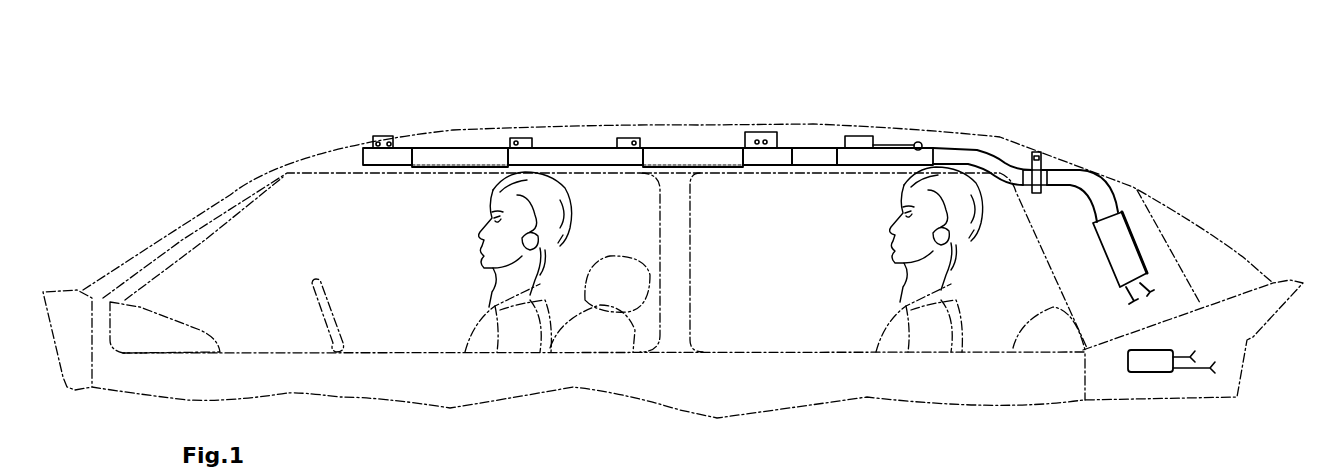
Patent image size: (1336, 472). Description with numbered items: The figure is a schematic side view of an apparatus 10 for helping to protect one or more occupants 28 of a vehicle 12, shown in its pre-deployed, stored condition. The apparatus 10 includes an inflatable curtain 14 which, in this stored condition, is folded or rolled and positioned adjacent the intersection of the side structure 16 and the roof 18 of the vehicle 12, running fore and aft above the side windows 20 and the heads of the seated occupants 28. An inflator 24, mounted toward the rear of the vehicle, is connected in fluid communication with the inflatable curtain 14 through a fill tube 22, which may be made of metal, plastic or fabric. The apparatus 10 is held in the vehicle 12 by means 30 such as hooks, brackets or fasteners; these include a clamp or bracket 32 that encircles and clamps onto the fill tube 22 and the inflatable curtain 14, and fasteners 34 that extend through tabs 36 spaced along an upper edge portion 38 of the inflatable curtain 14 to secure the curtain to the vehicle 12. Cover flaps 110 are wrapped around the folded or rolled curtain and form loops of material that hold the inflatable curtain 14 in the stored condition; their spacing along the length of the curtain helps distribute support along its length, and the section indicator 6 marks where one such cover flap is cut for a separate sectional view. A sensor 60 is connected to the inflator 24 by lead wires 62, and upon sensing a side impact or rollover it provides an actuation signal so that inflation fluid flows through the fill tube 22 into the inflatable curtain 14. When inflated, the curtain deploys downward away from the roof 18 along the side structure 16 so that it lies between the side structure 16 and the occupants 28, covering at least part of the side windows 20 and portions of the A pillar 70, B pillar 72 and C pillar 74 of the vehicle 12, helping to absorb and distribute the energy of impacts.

The section line 6- 6 is at (461, 186).
The apparatus 10 is at (748, 173).
The vehicle 12 is at (212, 162).
The inflatable curtain 14 is at (648, 143).
The side structure 16 is at (677, 373).
The roof 18 is at (698, 130).
The side windows 20 is at (392, 312).
The fill tube 22 is at (1077, 180).
The inflator 24 is at (1113, 238).
The occupants 28 is at (505, 250).
The means 30 is at (709, 121).
The clamp or bracket 32 is at (1040, 157).
The fasteners 34 is at (345, 110).
The tabs 36 is at (393, 140).
The upper edge portion 38 is at (813, 155).
The sensor 60 is at (1150, 362).
The lead wires 62 is at (1223, 215).
The A pillar 70 is at (177, 240).
The B pillar 72 is at (680, 281).
The C pillar 74 is at (1067, 266).
The cover flaps 110 is at (423, 157).